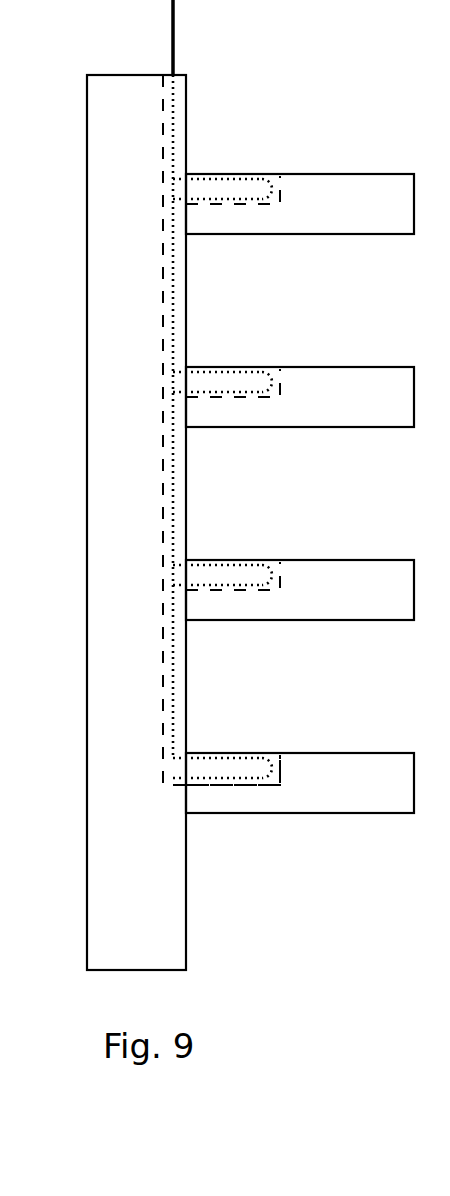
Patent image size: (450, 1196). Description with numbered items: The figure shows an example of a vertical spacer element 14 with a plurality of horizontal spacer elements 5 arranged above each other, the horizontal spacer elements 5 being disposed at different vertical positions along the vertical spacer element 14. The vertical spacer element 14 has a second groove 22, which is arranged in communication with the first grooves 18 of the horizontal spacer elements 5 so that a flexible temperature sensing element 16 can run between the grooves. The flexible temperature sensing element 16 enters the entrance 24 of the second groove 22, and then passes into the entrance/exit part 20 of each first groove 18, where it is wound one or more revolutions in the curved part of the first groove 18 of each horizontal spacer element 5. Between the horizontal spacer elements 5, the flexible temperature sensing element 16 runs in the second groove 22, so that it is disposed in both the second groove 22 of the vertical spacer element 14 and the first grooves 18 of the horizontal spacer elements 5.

The horizontal spacer element 5 is at (360, 200).
The vertical spacer element 14 is at (110, 147).
The flexible temperature sensing element 16 is at (174, 43).
The first groove 18 is at (260, 187).
The entrance/exit part 20 is at (198, 188).
The second groove 22 is at (163, 280).
The entrance 24 is at (173, 74).